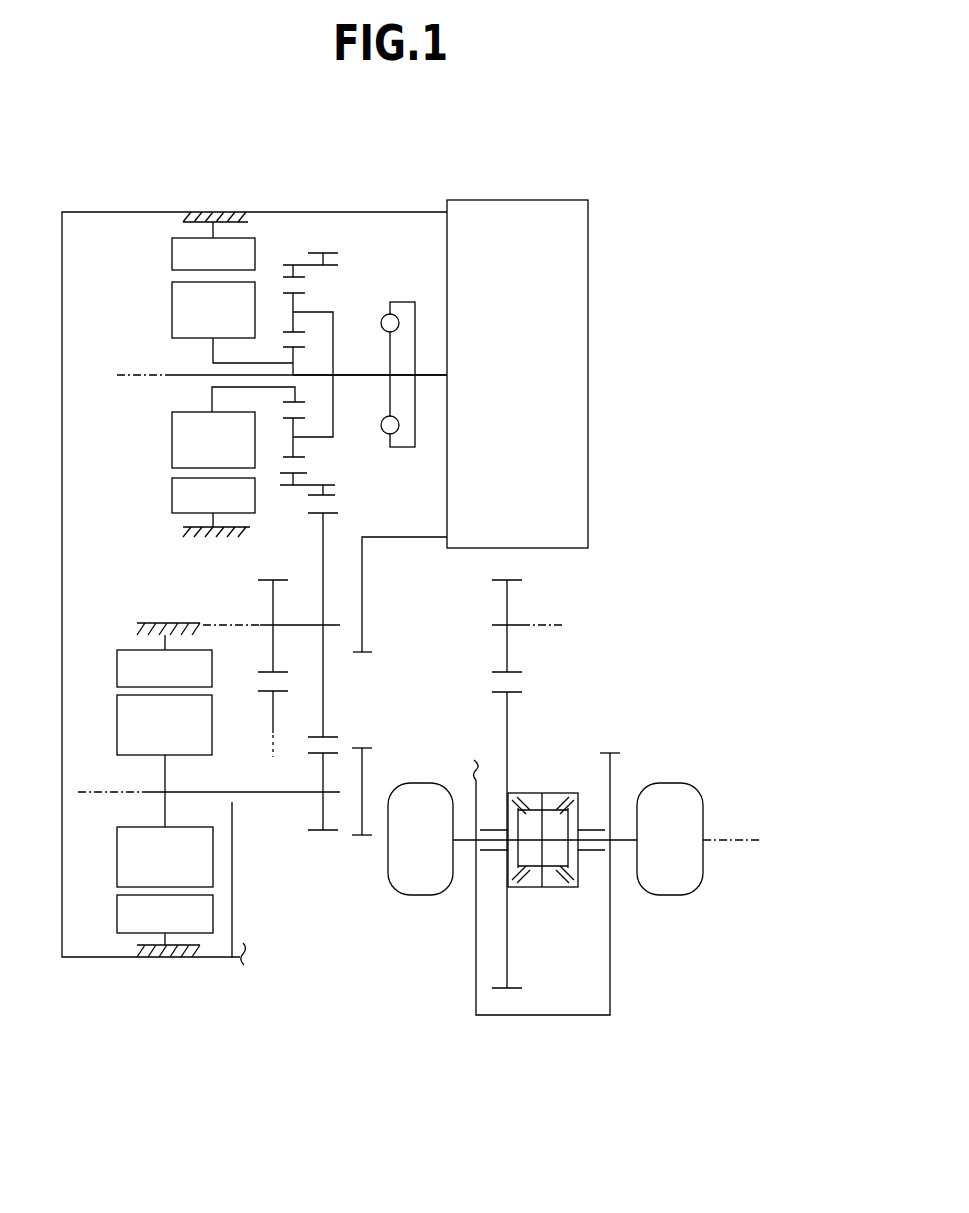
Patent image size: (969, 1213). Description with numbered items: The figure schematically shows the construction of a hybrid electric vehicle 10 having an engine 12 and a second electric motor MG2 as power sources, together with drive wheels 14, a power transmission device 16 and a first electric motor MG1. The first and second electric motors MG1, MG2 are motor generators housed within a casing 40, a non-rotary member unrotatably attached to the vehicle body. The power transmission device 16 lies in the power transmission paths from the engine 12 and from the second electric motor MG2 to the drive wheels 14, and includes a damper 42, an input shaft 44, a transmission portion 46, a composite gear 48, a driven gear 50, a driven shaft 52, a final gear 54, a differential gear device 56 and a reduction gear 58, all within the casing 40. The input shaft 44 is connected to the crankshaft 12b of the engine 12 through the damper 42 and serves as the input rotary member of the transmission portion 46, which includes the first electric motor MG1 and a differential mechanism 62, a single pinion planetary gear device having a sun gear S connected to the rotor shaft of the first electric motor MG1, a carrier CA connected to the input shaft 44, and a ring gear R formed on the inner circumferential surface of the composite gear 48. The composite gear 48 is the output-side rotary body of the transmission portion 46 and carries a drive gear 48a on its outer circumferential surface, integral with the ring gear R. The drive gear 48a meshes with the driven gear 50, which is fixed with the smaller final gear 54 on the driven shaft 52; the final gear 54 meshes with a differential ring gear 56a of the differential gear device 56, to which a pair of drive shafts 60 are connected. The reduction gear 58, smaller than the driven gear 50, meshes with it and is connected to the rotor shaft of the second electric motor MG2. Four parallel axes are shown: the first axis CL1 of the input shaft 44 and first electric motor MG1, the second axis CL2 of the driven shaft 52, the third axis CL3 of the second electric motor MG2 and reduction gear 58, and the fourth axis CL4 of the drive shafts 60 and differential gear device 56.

The electric vehicle 10 is at (481, 130).
The engine 12 is at (553, 535).
The crankshaft 12b is at (432, 382).
The drive wheels 14 is at (422, 887).
The power transmission device 16 is at (320, 1002).
The casing 40 is at (130, 212).
The damper 42 is at (396, 303).
The input shaft 44 is at (357, 373).
The transmission portion 46 is at (317, 316).
The composite gear 48 is at (305, 489).
The drive gear 48a is at (330, 493).
The driven gear 50 is at (330, 516).
The driven shaft 52 is at (505, 623).
The final gear 54 is at (503, 671).
The differential gear device 56 is at (553, 915).
The differential ring gear 56a is at (500, 695).
The reduction gear 58 is at (310, 829).
The drive shafts 60 is at (466, 848).
The differential mechanism 62 is at (293, 232).
The first electric motor MG1 is at (233, 374).
The second electric motor MG2 is at (165, 790).
The ring gear R is at (290, 268).
The sun gear S is at (298, 344).
The carrier CA is at (313, 309).
The first axis CL1 is at (129, 372).
The second axis CL2 is at (218, 622).
The third axis CL3 is at (96, 788).
The fourth axis CL4 is at (735, 836).